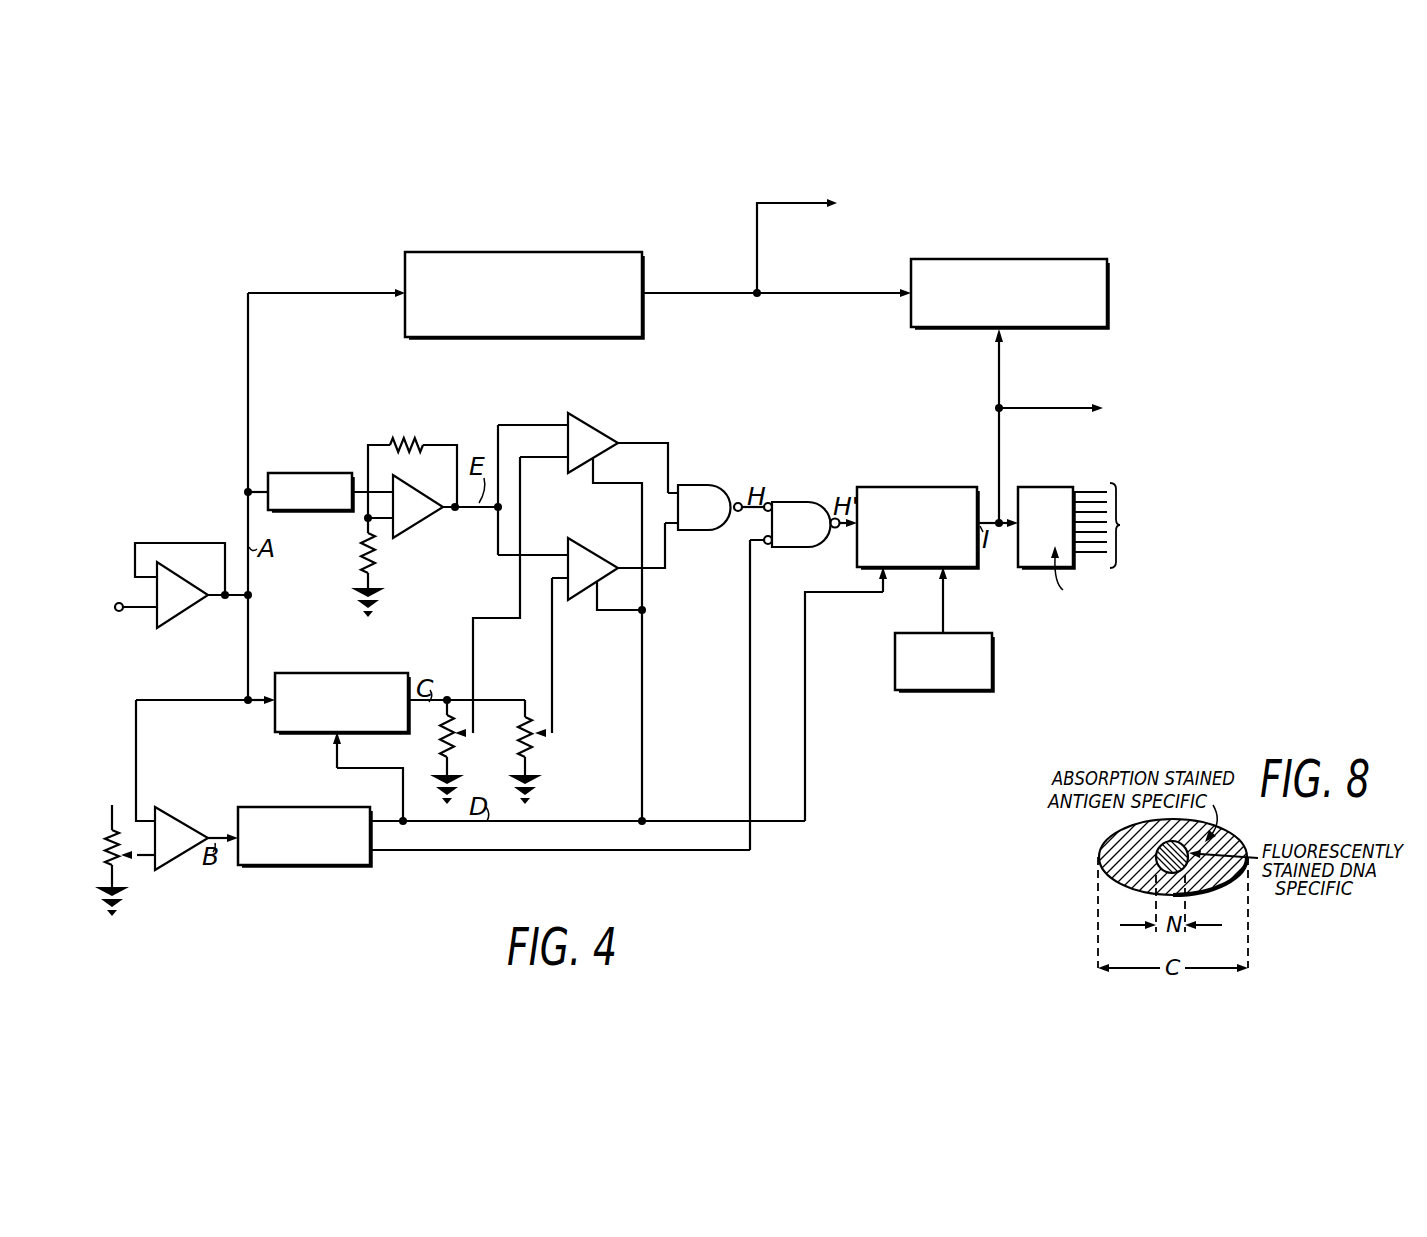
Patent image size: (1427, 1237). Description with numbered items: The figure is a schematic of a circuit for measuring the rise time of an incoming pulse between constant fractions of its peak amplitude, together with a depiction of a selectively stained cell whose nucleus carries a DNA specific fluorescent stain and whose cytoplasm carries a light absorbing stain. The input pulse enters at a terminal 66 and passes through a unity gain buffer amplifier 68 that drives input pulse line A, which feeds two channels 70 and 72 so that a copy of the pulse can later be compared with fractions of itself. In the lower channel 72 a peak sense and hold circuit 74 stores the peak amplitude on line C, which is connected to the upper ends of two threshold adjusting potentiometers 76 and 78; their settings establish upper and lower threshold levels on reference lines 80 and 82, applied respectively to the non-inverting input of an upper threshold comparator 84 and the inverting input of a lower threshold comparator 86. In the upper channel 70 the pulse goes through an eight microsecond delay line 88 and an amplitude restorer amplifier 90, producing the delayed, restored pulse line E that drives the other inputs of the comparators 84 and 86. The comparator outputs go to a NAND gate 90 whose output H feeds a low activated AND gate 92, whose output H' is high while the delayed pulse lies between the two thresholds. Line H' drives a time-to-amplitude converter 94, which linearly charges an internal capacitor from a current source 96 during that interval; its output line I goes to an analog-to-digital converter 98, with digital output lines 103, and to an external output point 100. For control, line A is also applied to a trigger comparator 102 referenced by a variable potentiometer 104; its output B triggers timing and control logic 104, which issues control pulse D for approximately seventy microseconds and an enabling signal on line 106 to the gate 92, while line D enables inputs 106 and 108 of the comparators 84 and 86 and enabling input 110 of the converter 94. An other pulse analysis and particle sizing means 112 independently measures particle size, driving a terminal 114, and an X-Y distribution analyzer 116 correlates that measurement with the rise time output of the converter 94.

The terminal 66 is at (119, 602).
The unity gain buffer amplifier 68 is at (195, 585).
The upper channel 70 is at (216, 471).
The lower channel 72 is at (230, 669).
The peak sense and hold circuit 74 is at (366, 673).
The threshold adjusting potentiometer 76 is at (445, 738).
The threshold adjusting potentiometer 78 is at (521, 739).
The upper threshold reference line 80 is at (481, 618).
The lower threshold reference line 82 is at (554, 682).
The upper threshold comparator 84 is at (597, 430).
The lower threshold comparator 86 is at (603, 552).
The delay line 88 is at (305, 473).
The amplitude restorer amplifier 90 is at (427, 527).
The low activated AND gate 92 is at (802, 503).
The time-to-amplitude converter 94 is at (912, 486).
The current source 96 is at (1008, 622).
The analog-to-digital converter 98 is at (1044, 487).
The external output point 100 is at (1086, 408).
The trigger comparator 102 is at (198, 808).
The digital output lines 103 is at (1120, 525).
The timing and control logic 104 is at (276, 807).
The enabling line 106 is at (592, 471).
The enabling input 108 is at (597, 597).
The enabling input 110 is at (885, 582).
The other pulse analysis and particle sizing means 112 is at (554, 253).
The terminal 114 is at (798, 231).
The X-Y distribution analyzer 116 is at (1034, 258).